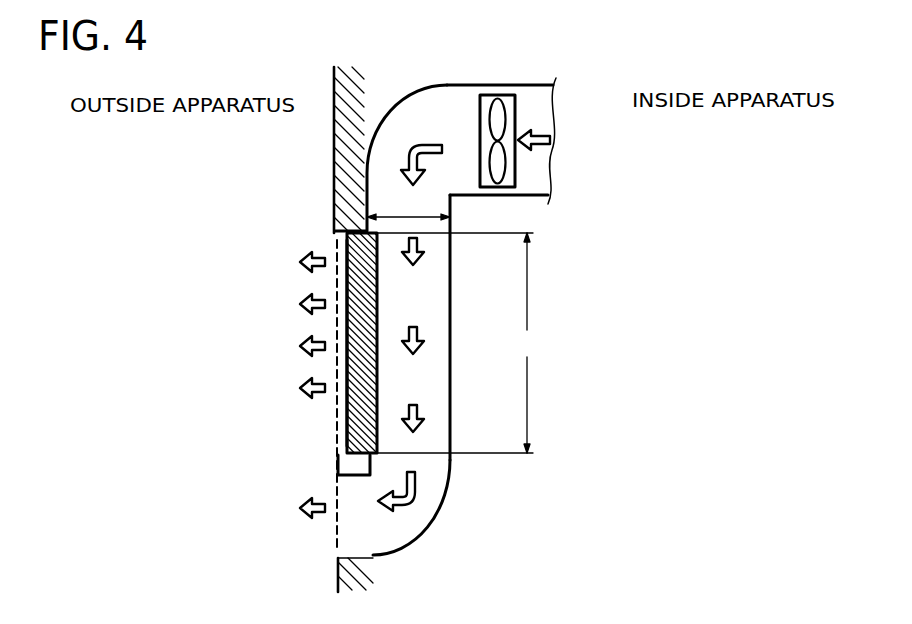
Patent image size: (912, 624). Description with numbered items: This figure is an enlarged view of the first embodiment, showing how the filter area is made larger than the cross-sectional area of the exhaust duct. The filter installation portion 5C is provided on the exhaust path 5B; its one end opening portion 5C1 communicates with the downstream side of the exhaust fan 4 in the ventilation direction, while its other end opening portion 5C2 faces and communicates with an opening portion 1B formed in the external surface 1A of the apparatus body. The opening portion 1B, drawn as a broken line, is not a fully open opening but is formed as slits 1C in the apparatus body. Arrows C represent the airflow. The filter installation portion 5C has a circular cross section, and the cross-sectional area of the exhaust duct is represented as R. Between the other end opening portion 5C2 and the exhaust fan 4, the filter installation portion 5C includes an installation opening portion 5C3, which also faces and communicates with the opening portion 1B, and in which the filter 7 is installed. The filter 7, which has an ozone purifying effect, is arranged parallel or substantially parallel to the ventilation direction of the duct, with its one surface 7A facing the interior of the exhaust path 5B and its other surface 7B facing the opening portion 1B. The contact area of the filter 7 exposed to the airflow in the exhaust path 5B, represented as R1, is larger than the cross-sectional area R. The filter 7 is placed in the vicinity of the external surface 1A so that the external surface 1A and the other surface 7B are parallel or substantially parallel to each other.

The external surface 1A is at (334, 155).
The opening portion 1B is at (338, 551).
The slits 1C is at (341, 503).
The exhaust fan 4 is at (516, 160).
The exhaust path 5B is at (543, 107).
The filter installation portion 5C is at (452, 413).
The one end opening portion 5C1 is at (448, 92).
The other end opening portion 5C2 is at (352, 542).
The installation opening portion 5C3 is at (357, 447).
The filter 7 is at (354, 359).
The one surface 7A is at (378, 296).
The other surface 7B is at (347, 287).
The arrows representing airflow C is at (424, 143).
The cross-sectional area of the exhaust duct R is at (408, 207).
The contact area of the filter R1 is at (460, 343).